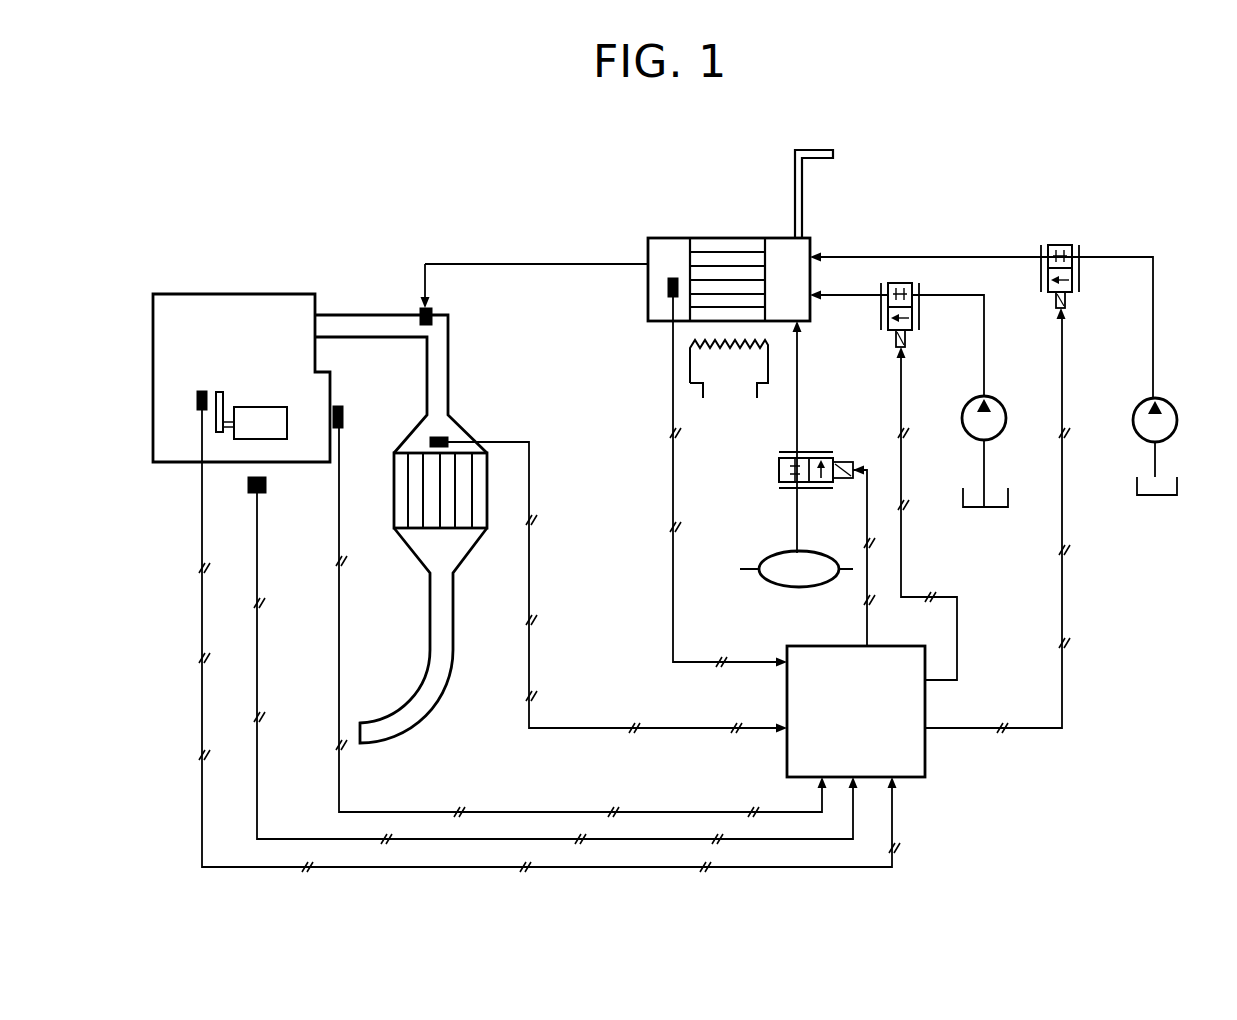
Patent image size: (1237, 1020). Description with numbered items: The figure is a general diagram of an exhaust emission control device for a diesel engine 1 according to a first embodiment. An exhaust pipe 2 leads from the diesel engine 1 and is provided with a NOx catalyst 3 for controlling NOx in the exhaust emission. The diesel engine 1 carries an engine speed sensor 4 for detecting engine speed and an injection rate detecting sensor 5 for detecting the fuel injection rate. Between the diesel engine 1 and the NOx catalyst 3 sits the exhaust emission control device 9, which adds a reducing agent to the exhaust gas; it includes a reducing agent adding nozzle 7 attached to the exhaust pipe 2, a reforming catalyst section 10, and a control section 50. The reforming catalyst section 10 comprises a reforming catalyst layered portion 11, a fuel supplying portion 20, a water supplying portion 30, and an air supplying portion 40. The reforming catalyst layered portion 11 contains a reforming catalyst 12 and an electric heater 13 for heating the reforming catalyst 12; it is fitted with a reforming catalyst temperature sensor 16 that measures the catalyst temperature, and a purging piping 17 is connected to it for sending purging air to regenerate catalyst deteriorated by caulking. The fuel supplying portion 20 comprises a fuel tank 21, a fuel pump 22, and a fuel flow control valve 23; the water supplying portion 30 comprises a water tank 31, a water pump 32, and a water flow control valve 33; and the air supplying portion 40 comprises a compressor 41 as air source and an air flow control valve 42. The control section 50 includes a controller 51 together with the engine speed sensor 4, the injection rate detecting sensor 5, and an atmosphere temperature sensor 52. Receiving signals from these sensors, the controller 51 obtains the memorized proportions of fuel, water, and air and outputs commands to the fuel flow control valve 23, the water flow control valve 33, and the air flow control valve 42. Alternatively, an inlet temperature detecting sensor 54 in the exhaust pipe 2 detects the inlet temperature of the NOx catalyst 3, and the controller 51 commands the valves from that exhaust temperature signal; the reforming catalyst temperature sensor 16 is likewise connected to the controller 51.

The diesel engine 1 is at (255, 300).
The exhaust pipe 2 is at (361, 313).
The NOx catalyst 3 is at (415, 500).
The engine speed sensor 4 is at (344, 415).
The injection rate detecting sensor 5 is at (197, 400).
The reducing agent adding nozzle 7 is at (434, 313).
The exhaust emission control device 9 is at (1092, 133).
The reforming catalyst section 10 is at (1005, 178).
The reforming catalyst layered portion 11 is at (815, 240).
The reforming catalyst 12 is at (726, 238).
The electric heater 13 is at (726, 365).
The reforming catalyst temperature sensor 16 is at (668, 287).
The purging piping 17 is at (810, 150).
The fuel supplying portion 20 is at (938, 283).
The fuel tank 21 is at (996, 510).
The fuel pump 22 is at (1004, 442).
The fuel flow control valve 23 is at (910, 334).
The water supplying portion 30 is at (1098, 247).
The water tank 31 is at (1178, 490).
The water pump 32 is at (1169, 409).
The water flow control valve 33 is at (1074, 298).
The air supplying portion 40 is at (778, 480).
The compressor 41 is at (771, 587).
The air flow control valve 42 is at (804, 452).
The control section 50 is at (930, 778).
The controller 51 is at (905, 766).
The atmosphere temperature sensor 52 is at (266, 485).
The inlet temperature detecting sensor 54 is at (443, 437).